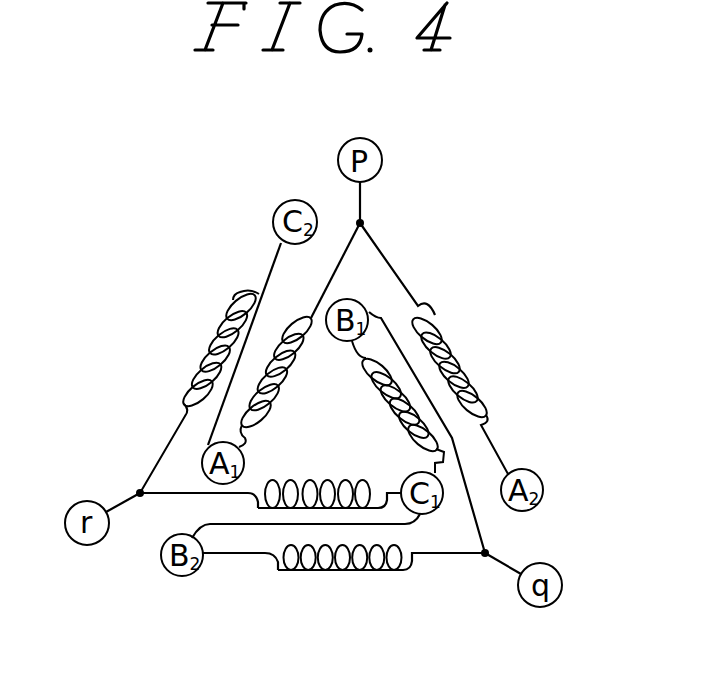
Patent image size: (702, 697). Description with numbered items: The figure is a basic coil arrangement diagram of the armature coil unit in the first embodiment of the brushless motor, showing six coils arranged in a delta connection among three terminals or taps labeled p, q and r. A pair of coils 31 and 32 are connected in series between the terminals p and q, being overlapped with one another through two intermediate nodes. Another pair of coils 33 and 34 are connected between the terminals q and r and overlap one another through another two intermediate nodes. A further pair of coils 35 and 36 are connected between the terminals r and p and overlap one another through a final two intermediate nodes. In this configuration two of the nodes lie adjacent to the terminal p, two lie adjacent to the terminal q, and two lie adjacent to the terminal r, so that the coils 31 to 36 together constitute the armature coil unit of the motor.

The coil 31 is at (452, 342).
The coil 32 is at (445, 450).
The coil 33 is at (313, 572).
The coil 34 is at (260, 514).
The coil 35 is at (207, 343).
The coil 36 is at (290, 322).